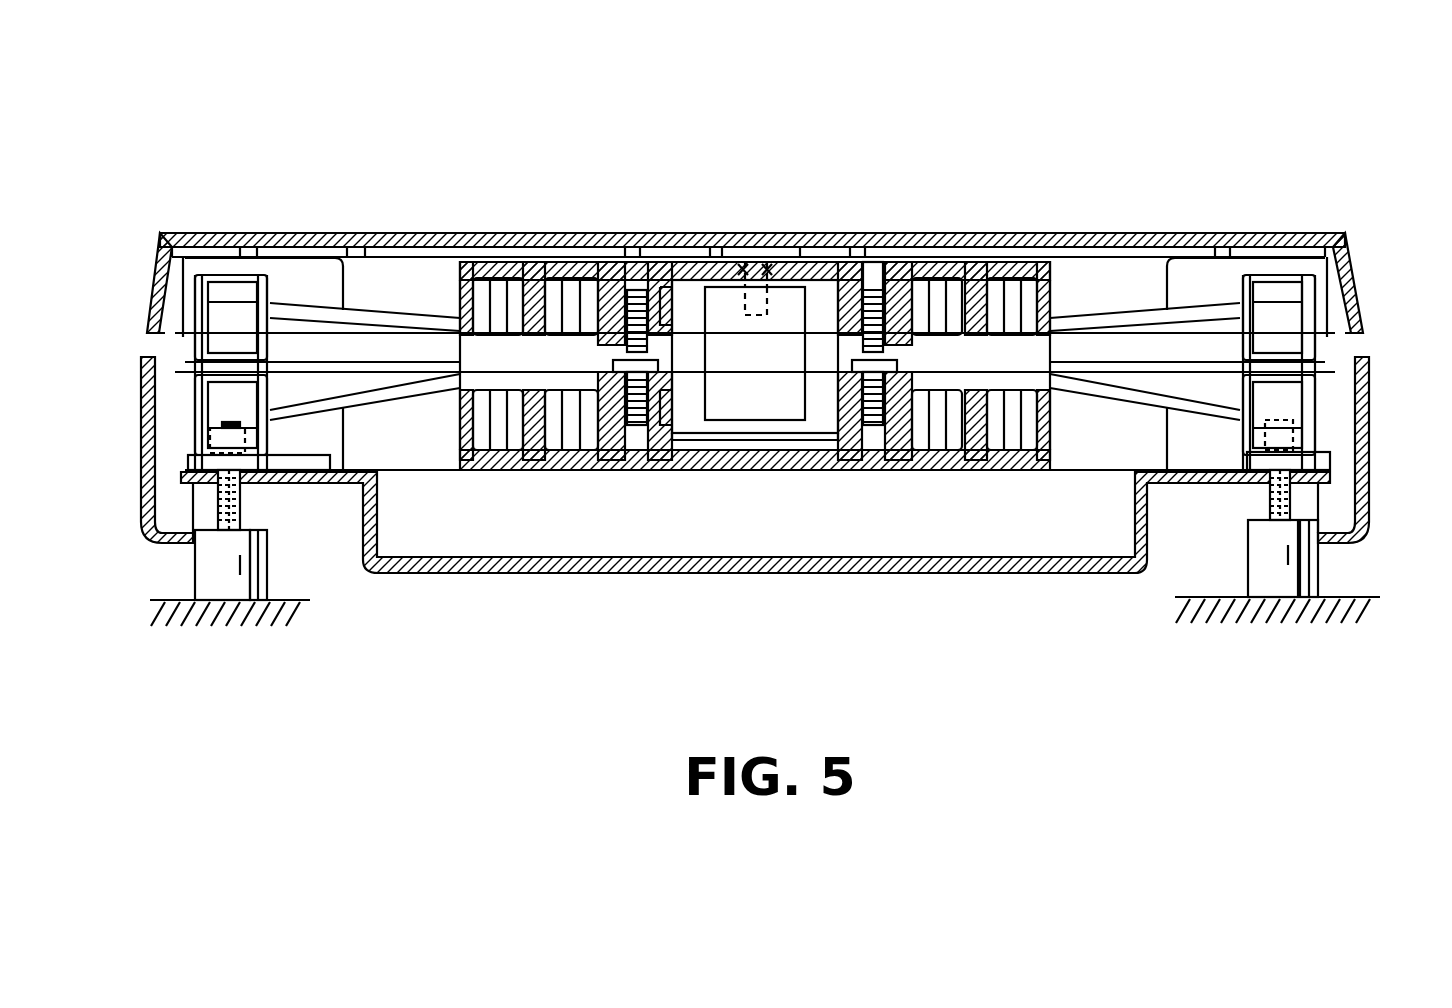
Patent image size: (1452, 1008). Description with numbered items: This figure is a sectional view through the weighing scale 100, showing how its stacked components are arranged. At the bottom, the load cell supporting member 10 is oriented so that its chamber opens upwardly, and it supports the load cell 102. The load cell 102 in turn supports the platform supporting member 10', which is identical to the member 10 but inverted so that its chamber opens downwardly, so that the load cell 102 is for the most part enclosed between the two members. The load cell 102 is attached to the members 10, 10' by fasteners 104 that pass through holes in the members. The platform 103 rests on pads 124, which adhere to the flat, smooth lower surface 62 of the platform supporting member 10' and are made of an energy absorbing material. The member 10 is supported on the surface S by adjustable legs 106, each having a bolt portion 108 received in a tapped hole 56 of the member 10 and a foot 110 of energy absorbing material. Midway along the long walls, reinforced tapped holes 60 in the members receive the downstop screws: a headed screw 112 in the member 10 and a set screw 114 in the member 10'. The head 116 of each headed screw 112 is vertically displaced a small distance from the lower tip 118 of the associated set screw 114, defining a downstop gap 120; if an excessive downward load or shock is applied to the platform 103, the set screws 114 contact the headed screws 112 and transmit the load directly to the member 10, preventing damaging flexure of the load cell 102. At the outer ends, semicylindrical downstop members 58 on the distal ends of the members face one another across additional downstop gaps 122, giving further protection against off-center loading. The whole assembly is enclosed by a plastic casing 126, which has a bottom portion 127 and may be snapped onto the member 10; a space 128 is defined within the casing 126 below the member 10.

The weighing scale 100 is at (1062, 148).
The platform supporting member 10' is at (755, 236).
The platform 103 is at (1166, 255).
The pads 124 is at (1278, 240).
The lower surface 62 is at (448, 472).
The reinforced tapped holes 60 is at (858, 470).
The set screw 114 is at (882, 275).
The headed screw 112 is at (878, 470).
The fasteners 104 is at (790, 224).
The semicylindrical downstop member 58 is at (1355, 402).
The downstop gaps 122 is at (1243, 363).
The downstop gap 120 is at (908, 356).
The lower tip 118 is at (845, 355).
The head 116 is at (805, 365).
The load cell 102 is at (750, 418).
The tapped hole 56 is at (1270, 455).
The bolt portion 108 is at (1268, 502).
The foot 110 is at (1250, 570).
The adjustable legs 106 is at (1342, 573).
The surface S is at (1372, 600).
The plastic casing 126 is at (1410, 413).
The load cell supporting member 10 is at (755, 546).
The bottom portion 127 is at (878, 565).
The space 128 is at (733, 545).